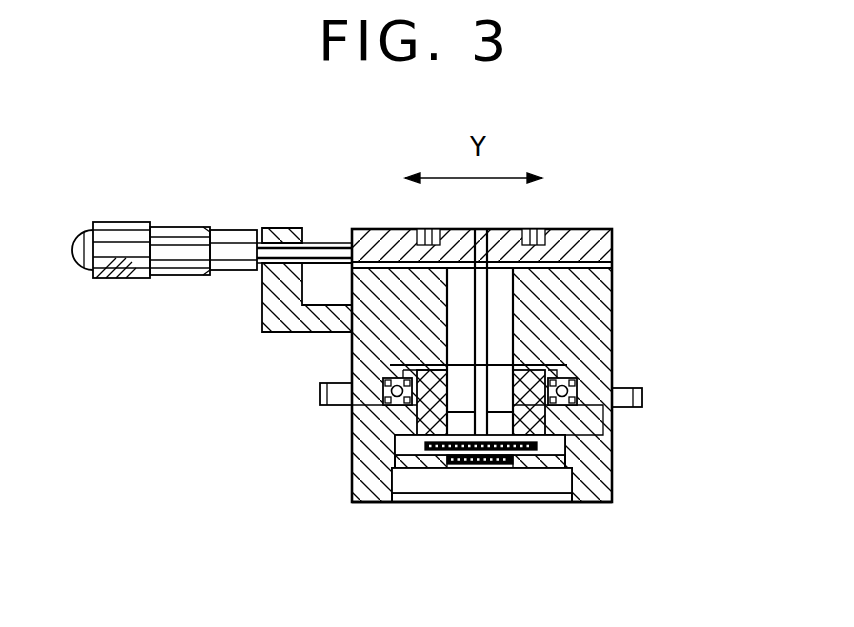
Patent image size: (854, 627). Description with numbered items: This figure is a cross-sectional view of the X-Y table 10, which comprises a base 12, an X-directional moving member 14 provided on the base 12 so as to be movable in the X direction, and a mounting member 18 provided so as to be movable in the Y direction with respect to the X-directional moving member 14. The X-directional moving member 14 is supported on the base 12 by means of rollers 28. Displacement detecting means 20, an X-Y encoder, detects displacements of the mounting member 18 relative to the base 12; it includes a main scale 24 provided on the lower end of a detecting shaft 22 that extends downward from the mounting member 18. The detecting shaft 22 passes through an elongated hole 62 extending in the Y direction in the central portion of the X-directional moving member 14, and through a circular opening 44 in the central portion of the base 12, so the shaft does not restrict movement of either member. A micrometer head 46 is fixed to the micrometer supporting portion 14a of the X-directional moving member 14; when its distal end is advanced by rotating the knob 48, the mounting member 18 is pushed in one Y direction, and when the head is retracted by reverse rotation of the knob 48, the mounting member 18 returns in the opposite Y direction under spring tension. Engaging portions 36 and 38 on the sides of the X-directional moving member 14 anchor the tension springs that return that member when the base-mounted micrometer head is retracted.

The X-Y table 10 is at (625, 195).
The base 12 is at (612, 465).
The X-directional moving member 14 is at (612, 313).
The micrometer supporting portion 14a is at (262, 318).
The mounting member 18 is at (572, 229).
The displacement detecting means 20 is at (460, 465).
The detecting shaft 22 is at (488, 292).
The main scale 24 is at (550, 450).
The rollers 28 is at (396, 407).
The engaging portion 36 is at (320, 393).
The engaging portion 38 is at (643, 404).
The circular opening 44 is at (418, 422).
The micrometer head 46 is at (205, 227).
The knob 48 is at (120, 222).
The elongated hole 62 is at (515, 335).